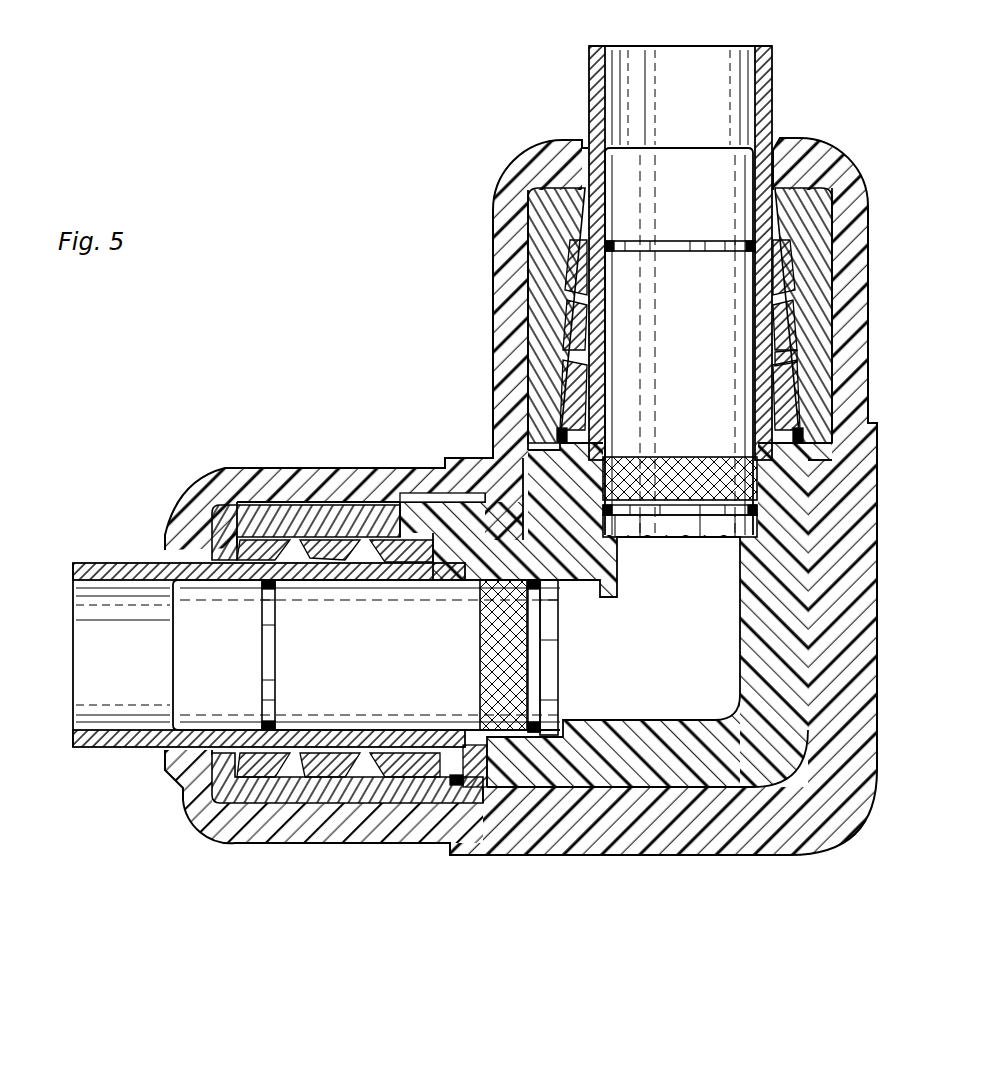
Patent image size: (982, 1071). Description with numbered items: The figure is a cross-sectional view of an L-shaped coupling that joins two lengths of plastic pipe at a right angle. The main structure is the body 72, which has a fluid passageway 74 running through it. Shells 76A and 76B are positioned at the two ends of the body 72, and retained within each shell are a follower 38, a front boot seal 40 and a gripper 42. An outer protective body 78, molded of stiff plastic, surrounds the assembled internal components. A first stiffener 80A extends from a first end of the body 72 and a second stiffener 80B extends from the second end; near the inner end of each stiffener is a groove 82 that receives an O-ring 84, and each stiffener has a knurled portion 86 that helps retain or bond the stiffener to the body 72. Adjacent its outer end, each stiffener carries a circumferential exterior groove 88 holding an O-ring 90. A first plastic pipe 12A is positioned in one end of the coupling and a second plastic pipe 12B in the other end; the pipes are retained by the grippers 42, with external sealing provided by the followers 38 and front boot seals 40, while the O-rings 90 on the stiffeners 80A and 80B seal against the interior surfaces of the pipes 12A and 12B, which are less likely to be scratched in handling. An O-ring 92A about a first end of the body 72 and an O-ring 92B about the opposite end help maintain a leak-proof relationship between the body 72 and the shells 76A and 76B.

The first plastic pipe 12A is at (763, 113).
The second plastic pipe 12B is at (137, 560).
The follower 38 is at (752, 378).
The front boot seal 40 is at (786, 325).
The gripper 42 is at (790, 250).
The body 72 is at (787, 567).
The fluid passageway 74 is at (718, 636).
The shell 76A is at (795, 305).
The shell 76B is at (237, 503).
The outer protective body 78 is at (857, 678).
The first stiffener 80A is at (793, 372).
The second stiffener 80B is at (400, 715).
The groove 82 is at (700, 513).
The O-ring 84 is at (760, 510).
The knurled portion 86 is at (725, 457).
The circumferential exterior groove 88 is at (677, 246).
The O-ring 90 is at (743, 253).
The O-ring 92A is at (803, 420).
The O-ring 92B is at (448, 815).